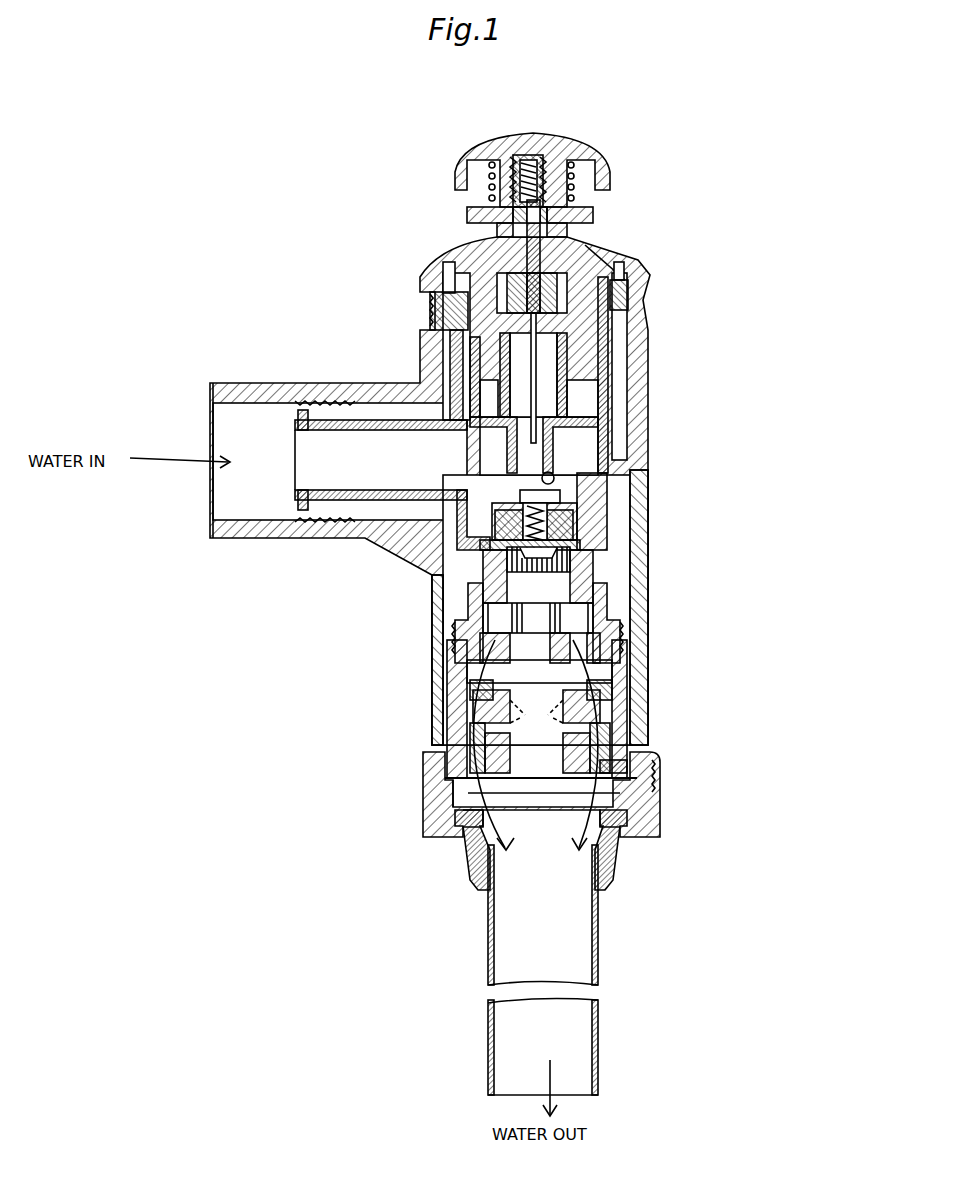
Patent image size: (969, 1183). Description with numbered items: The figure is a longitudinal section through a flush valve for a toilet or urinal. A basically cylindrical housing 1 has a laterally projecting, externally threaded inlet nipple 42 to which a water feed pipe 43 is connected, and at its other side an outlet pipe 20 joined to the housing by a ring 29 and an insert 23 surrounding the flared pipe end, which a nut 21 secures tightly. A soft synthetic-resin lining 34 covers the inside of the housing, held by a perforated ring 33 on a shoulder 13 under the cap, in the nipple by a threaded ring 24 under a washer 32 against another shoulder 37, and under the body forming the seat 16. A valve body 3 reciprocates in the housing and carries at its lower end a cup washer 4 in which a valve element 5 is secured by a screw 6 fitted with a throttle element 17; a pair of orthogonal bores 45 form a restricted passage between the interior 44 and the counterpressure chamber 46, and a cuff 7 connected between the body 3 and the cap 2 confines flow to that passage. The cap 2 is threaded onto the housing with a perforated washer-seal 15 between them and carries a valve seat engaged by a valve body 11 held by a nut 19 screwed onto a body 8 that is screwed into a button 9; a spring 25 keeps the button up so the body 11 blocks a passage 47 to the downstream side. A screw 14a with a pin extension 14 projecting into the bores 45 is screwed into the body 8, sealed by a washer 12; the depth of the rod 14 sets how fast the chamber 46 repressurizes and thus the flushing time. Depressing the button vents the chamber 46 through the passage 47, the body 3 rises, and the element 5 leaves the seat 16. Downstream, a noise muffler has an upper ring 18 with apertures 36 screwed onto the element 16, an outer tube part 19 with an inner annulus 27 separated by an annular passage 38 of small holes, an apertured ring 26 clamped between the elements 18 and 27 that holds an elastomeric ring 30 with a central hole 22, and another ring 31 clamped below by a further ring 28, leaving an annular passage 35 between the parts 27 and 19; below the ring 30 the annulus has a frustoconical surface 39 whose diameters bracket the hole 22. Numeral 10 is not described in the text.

The housing 1 is at (632, 372).
The cap 2 is at (560, 226).
The valve body 3 is at (548, 437).
The cup washer 4 is at (560, 522).
The valve element 5 is at (575, 545).
The screw 6 is at (480, 548).
The cuff 7 is at (554, 478).
The body 8 is at (520, 215).
The button 9 is at (488, 148).
The stem nut 10 is at (506, 285).
The valve body 11 is at (528, 265).
The washer 12 is at (535, 158).
The shoulder 13 is at (447, 338).
The pin extension 14 is at (527, 322).
The screw 14a is at (537, 183).
The perforated washer-seal 15 is at (624, 275).
The seat 16 is at (475, 592).
The throttle element 17 is at (572, 560).
The upper ring 18 is at (605, 628).
The outer tube part 19 is at (468, 686).
The outlet pipe 20 is at (600, 1015).
The nut 21 is at (455, 800).
The central hole 22 is at (538, 708).
The insert 23 is at (612, 866).
The threaded ring 24 is at (300, 498).
The spring 25 is at (488, 196).
The apertured ring 26 is at (622, 672).
The inner annulus 27 is at (595, 720).
The ring 28 is at (608, 768).
The ring 29 is at (645, 806).
The elastomeric ring 30 is at (475, 724).
The ring 31 is at (470, 776).
The washer 32 is at (300, 422).
The perforated ring 33 is at (617, 308).
The lining 34 is at (604, 408).
The annular passage 35 is at (465, 785).
The apertures 36 is at (455, 645).
The shoulder 37 is at (312, 400).
The annular passage 38 is at (470, 712).
The frustoconical surface 39 is at (488, 742).
The inlet nipple 42 is at (328, 457).
The water feed pipe 43 is at (218, 528).
The interior 44 is at (590, 478).
The bores 45 is at (575, 507).
The counterpressure chamber 46 is at (552, 352).
The passage 47 is at (588, 250).